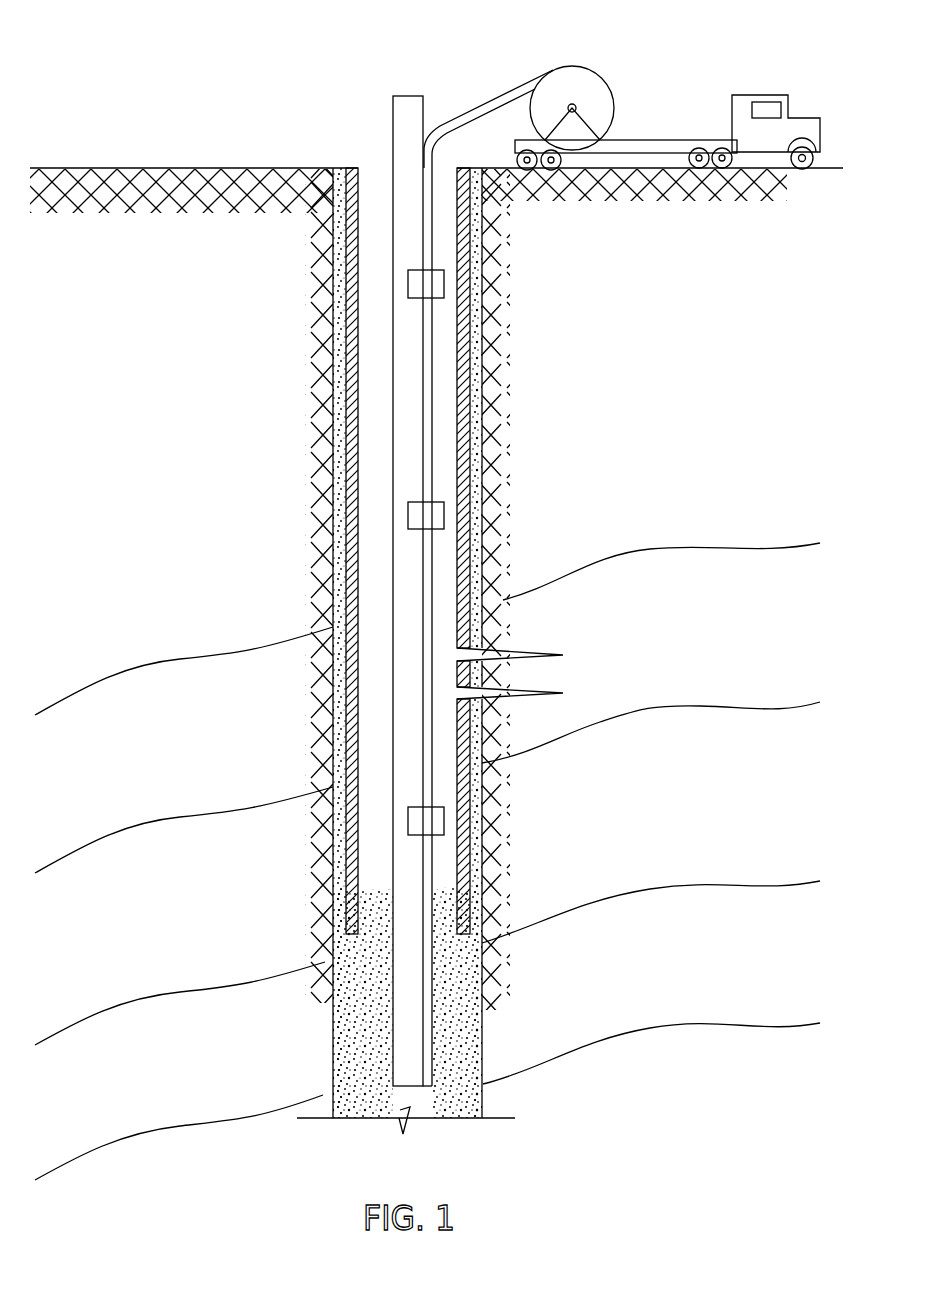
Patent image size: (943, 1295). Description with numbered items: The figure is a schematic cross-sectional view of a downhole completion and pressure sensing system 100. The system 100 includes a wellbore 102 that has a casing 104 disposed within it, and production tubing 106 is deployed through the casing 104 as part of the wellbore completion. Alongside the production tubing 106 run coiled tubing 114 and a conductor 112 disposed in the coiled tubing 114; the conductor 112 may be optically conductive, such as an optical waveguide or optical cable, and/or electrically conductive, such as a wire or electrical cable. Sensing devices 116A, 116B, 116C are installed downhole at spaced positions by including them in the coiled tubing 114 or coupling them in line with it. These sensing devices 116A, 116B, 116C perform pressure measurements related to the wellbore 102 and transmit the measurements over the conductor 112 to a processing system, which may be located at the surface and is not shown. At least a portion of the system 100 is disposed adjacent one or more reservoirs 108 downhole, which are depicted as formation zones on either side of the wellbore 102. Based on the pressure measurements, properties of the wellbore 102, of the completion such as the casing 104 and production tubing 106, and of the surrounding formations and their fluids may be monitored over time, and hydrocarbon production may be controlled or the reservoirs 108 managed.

The downhole completion and pressure sensing system 100 is at (706, 44).
The wellbore 102 is at (184, 517).
The casing 104 is at (470, 437).
The production tubing 106 is at (393, 383).
The reservoirs 108 is at (790, 632).
The conductor 112 is at (550, 557).
The coiled tubing 114 is at (480, 110).
The sensing device 116A is at (444, 279).
The sensing device 116B is at (444, 512).
The sensing device 116C is at (444, 816).